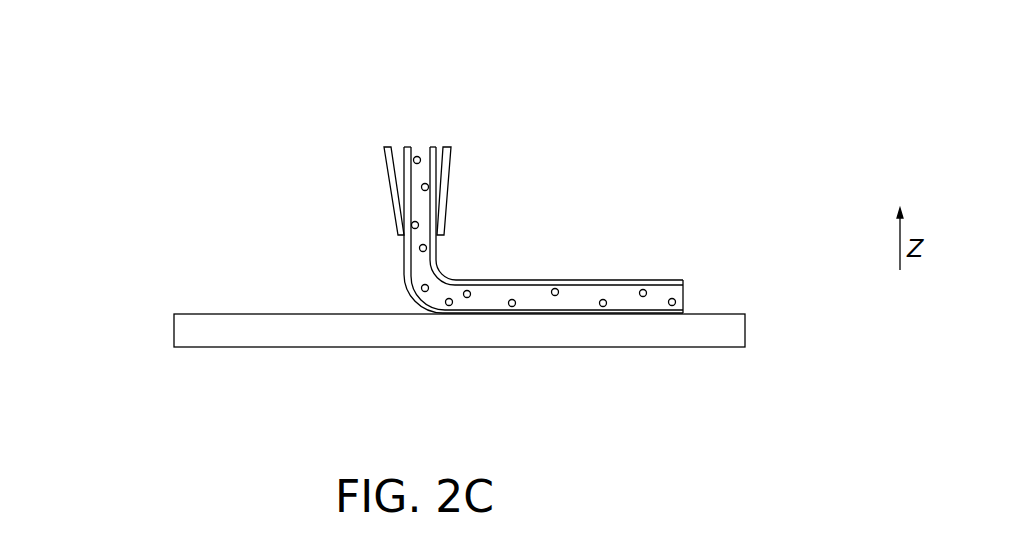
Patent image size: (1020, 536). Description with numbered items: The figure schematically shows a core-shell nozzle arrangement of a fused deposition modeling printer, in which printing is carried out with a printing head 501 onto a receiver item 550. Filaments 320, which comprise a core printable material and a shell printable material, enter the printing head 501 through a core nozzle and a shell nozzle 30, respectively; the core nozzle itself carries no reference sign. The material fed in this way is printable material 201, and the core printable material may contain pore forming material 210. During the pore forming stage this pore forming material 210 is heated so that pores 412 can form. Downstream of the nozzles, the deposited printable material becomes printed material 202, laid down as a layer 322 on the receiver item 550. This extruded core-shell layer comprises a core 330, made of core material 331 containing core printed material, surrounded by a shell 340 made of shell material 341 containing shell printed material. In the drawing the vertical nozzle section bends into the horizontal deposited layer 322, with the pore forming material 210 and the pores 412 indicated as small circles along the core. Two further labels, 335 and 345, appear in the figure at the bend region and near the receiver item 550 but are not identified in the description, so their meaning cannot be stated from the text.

The receiver item 550 is at (236, 282).
The first printer head 501 is at (385, 163).
The shell nozzle 30 is at (442, 171).
The first rail / bending portion 335 is at (406, 257).
The pores 412 is at (410, 291).
The 3D printable material 201 is at (452, 248).
The pore forming material 210 is at (417, 156).
The filaments 320 is at (424, 147).
The 3D printed material 202 is at (633, 262).
The shell 340 is at (683, 282).
The layer 322 is at (683, 297).
The bend bottom 345 is at (427, 316).
The core material 331 is at (504, 305).
The core 330 is at (626, 303).
The shell material 341 is at (673, 315).